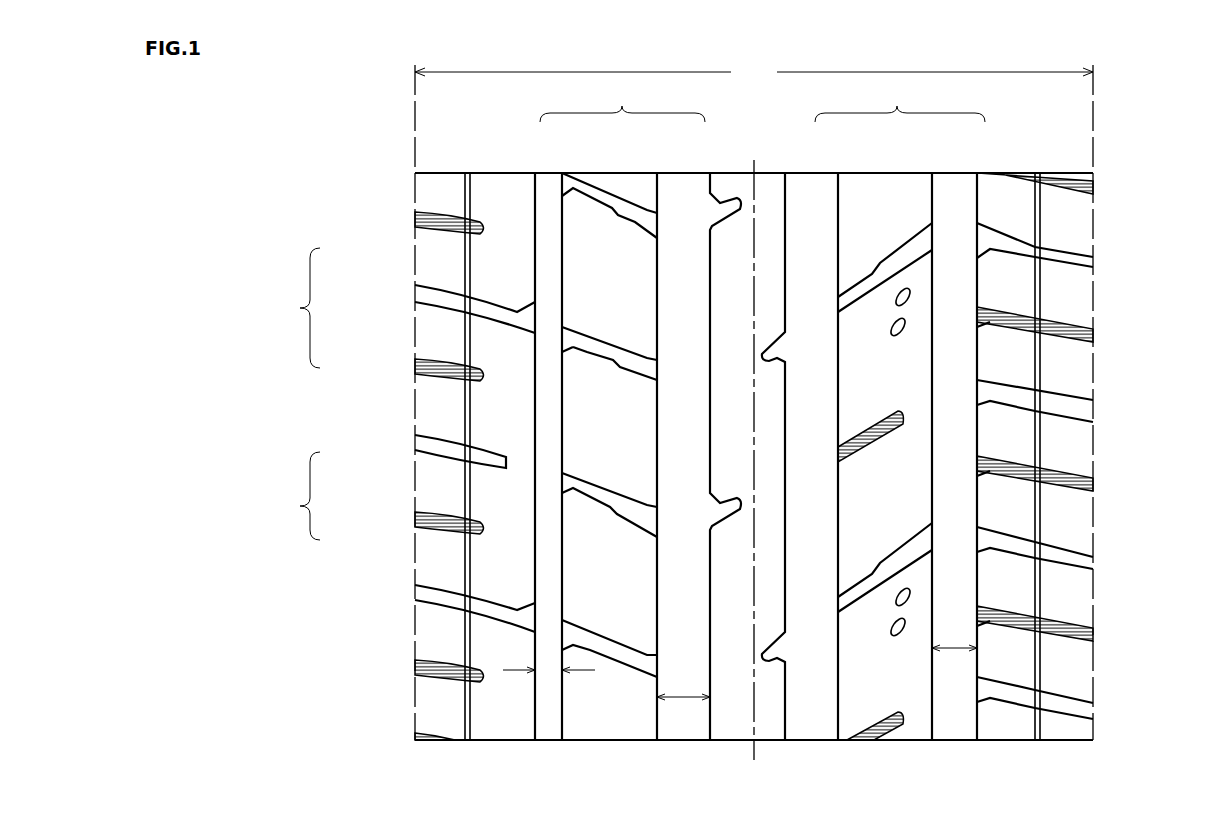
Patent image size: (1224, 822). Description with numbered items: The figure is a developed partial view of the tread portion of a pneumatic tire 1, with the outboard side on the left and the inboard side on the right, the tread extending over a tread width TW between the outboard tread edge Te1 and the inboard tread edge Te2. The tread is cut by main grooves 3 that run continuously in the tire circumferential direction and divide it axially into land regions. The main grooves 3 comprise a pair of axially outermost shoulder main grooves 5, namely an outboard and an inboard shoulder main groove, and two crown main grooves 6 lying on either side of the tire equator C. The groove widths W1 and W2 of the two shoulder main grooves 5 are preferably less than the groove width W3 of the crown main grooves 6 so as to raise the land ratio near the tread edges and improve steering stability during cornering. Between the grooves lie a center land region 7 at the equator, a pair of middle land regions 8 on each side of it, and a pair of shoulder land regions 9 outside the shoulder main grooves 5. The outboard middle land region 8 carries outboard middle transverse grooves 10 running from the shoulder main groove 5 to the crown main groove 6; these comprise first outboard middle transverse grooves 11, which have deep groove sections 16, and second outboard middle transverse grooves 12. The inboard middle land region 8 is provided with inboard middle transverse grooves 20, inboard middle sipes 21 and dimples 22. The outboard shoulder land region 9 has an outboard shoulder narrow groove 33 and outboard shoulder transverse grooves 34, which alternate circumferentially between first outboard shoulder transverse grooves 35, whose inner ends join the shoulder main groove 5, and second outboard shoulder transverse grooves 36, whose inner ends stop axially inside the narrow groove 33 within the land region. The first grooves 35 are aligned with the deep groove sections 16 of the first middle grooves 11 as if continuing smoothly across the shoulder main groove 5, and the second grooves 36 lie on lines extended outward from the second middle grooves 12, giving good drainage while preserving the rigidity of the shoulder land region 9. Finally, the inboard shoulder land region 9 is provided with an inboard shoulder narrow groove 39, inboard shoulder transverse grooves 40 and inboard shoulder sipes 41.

The pneumatic tire 1 is at (782, 165).
The main grooves 3 is at (895, 120).
The shoulder main grooves 5 is at (548, 217).
The crown main groove 6 is at (692, 217).
The center land region 7 is at (767, 718).
The middle land region 8 is at (610, 703).
The shoulder land region 9 is at (655, 802).
The outboard middle transverse grooves 10 is at (459, 433).
The first outboard middle transverse grooves 11 is at (612, 362).
The second outboard middle transverse grooves 12 is at (588, 497).
The deep groove sections 16 is at (573, 342).
The inboard middle transverse grooves 20 is at (902, 258).
The inboard middle sipes 21 is at (873, 440).
The dimples 22 is at (912, 300).
The outboard shoulder narrow groove 33 is at (468, 190).
The outboard shoulder transverse grooves 34 is at (398, 308).
The first outboard shoulder transverse grooves 35 is at (460, 297).
The second outboard shoulder transverse grooves 36 is at (455, 440).
The inboard shoulder narrow groove 39 is at (1038, 204).
The inboard shoulder transverse grooves 40 is at (1040, 407).
The inboard shoulder sipes 41 is at (1055, 628).
The tire equator C is at (752, 447).
The tread width TW is at (754, 73).
The groove width of the outboard shoulder main groove W1 is at (551, 672).
The groove width of the inboard shoulder main groove W2 is at (958, 655).
The groove width of the crown main groove W3 is at (683, 700).
The outboard tread edge Te1 is at (415, 183).
The inboard tread edge Te2 is at (1093, 207).